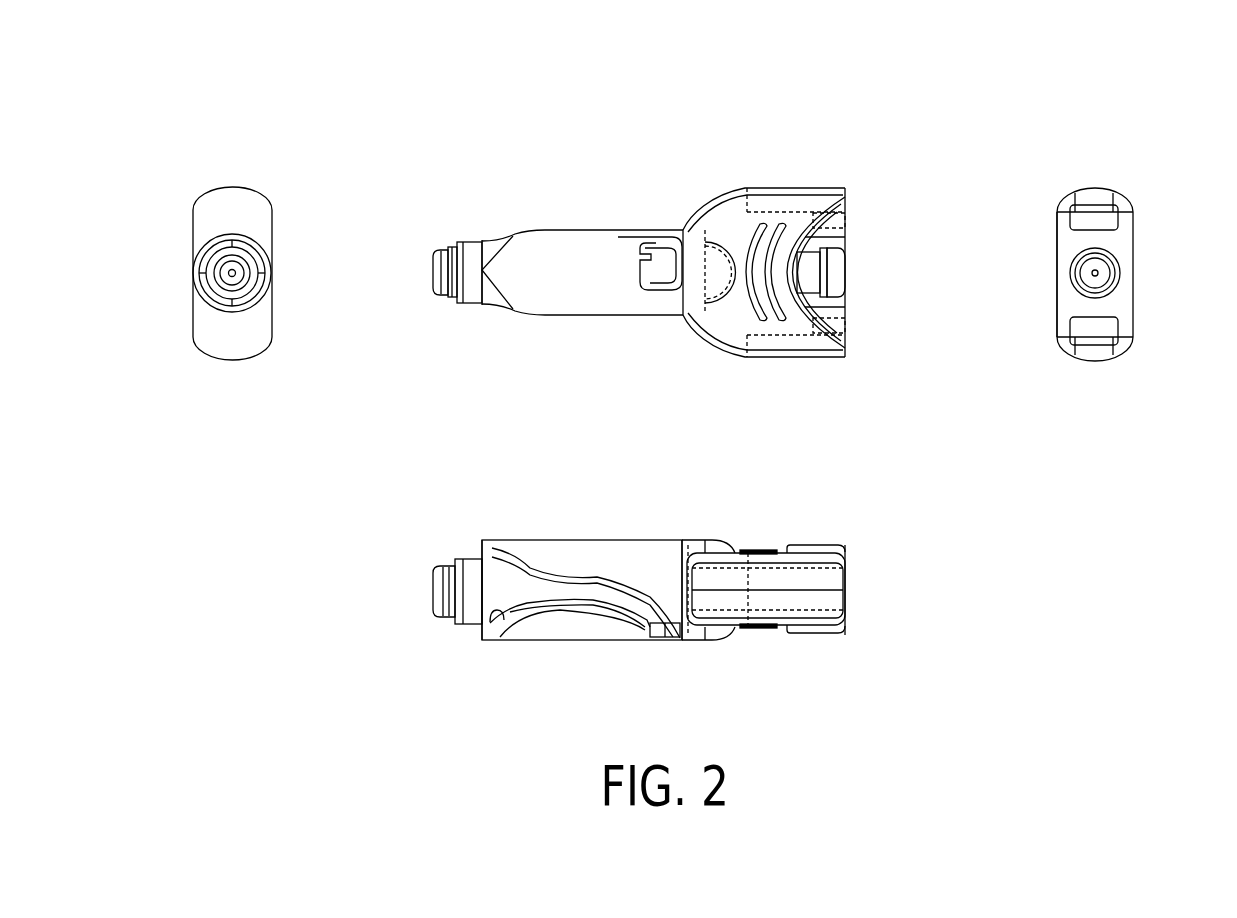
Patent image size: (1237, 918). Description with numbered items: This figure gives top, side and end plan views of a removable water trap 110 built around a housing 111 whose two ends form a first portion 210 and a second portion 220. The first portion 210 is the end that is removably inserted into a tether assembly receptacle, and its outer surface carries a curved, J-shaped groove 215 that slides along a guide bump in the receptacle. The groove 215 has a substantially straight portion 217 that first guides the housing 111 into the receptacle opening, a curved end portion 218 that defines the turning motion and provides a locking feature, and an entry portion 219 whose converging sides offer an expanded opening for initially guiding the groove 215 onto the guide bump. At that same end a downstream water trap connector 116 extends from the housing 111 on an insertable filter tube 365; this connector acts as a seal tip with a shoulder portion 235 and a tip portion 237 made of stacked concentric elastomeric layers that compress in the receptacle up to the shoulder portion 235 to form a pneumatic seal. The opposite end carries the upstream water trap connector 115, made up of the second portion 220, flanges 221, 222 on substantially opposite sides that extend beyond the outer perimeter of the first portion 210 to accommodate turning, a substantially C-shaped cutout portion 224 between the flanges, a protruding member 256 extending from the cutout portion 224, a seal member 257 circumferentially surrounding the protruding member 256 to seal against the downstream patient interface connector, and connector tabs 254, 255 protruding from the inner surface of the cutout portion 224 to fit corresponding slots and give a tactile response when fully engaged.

The water trap 110 is at (462, 122).
The housing 111 is at (560, 312).
The upstream water trap connector 115 is at (806, 178).
The downstream water trap connector 116 is at (197, 281).
The first portion 210 is at (563, 245).
The groove 215 is at (632, 231).
The straight portion 217 is at (562, 592).
The curved end portion 218 is at (653, 281).
The entry portion 219 is at (493, 624).
The second portion 220 is at (757, 222).
The flange 221 is at (838, 188).
The flange 222 is at (812, 358).
The cutout portion 224 is at (814, 305).
The shoulder portion 235 is at (197, 256).
The tip portion 237 is at (264, 273).
The connector tab 254 is at (844, 226).
The connector tab 255 is at (828, 323).
The protruding member 256 is at (818, 238).
The seal member 257 is at (836, 268).
The filter tube 365 is at (500, 307).